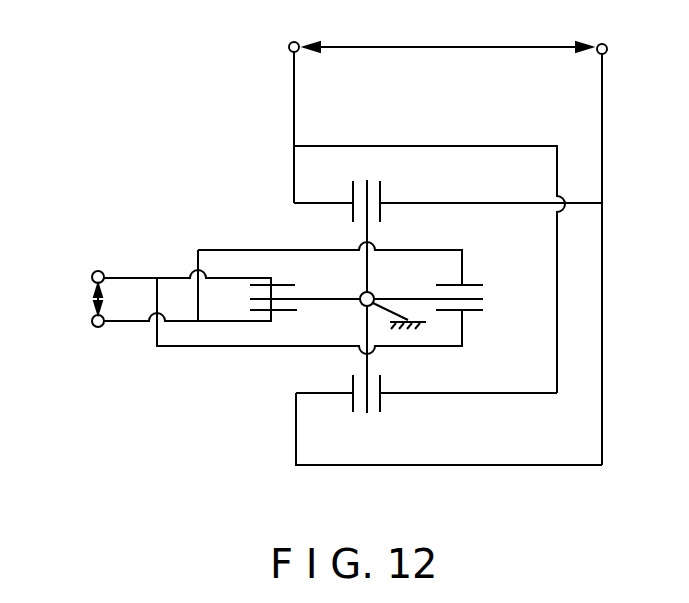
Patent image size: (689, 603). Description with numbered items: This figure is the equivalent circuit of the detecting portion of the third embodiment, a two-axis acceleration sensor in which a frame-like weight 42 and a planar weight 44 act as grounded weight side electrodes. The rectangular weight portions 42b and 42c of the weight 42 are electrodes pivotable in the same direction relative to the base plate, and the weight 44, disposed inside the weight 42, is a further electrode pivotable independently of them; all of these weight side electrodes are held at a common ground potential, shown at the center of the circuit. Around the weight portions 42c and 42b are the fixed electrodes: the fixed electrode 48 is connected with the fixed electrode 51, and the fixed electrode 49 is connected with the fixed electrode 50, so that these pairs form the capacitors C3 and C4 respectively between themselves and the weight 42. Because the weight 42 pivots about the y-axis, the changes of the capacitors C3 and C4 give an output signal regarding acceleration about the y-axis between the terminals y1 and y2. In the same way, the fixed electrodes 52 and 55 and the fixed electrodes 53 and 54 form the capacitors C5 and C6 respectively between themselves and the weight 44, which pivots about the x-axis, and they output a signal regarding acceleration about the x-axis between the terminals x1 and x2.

The frame-like weight 42 is at (367, 180).
The rectangular weight portion 42b is at (368, 414).
The rectangular weight portion 42c is at (366, 234).
The rectangular planar weight 44 is at (317, 300).
The fixed electrode 48 is at (353, 404).
The fixed electrode 49 is at (353, 197).
The fixed electrode 50 is at (383, 401).
The fixed electrode 51 is at (381, 207).
The fixed electrode 52 is at (466, 283).
The fixed electrode 53 is at (293, 283).
The fixed electrode 54 is at (468, 310).
The fixed electrode 55 is at (256, 311).
The capacitor C3 is at (355, 186).
The capacitor C4 is at (378, 186).
The capacitor C5 is at (257, 305).
The capacitor C6 is at (296, 293).
The terminal y1 is at (299, 106).
The terminal y2 is at (603, 237).
The terminal x1 is at (71, 281).
The terminal x2 is at (71, 328).